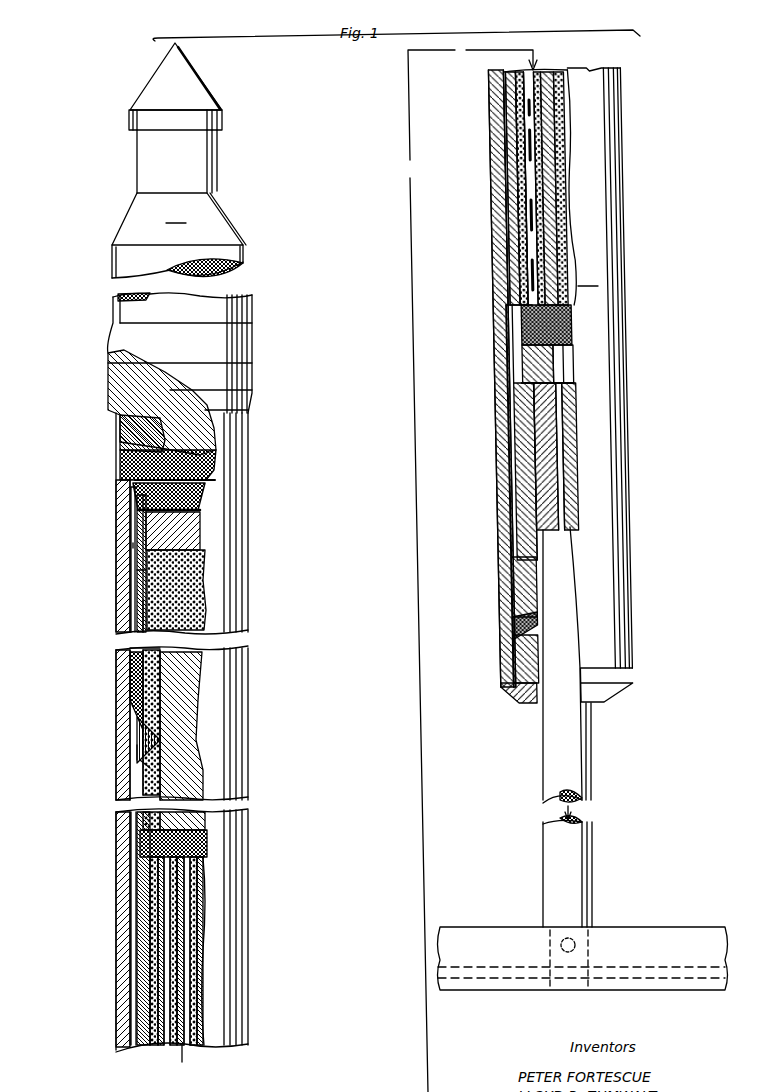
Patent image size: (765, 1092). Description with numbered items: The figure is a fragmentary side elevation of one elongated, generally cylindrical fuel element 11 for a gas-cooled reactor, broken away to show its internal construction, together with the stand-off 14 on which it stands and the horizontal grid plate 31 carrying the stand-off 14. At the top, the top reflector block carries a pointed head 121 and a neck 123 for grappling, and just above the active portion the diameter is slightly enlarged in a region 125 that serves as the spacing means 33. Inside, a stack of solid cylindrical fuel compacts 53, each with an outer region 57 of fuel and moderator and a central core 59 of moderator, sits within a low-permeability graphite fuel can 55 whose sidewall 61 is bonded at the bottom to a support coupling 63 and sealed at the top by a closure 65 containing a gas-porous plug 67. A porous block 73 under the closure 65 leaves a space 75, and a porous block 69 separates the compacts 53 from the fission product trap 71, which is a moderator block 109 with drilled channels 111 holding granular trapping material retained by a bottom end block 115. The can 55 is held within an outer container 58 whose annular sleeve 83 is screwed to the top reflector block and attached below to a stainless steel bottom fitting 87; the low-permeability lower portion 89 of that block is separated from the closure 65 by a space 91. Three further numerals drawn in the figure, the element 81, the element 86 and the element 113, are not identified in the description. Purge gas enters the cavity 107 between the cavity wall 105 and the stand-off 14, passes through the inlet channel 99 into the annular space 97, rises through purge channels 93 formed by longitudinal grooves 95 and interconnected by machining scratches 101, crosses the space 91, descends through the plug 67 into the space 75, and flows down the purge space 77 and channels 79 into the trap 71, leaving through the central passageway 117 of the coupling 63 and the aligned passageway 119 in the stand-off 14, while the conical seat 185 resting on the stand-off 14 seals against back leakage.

The fuel element 11 is at (372, 385).
The stand-off 14 is at (590, 740).
The grid plate 31 is at (623, 932).
The spacing means 33 is at (250, 335).
The fuel compact 53 is at (202, 570).
The fuel can 55 is at (137, 570).
The outer region 57 is at (143, 675).
The outer container 58 is at (130, 513).
The central core 59 is at (177, 698).
The sidewall 61 is at (143, 623).
The support coupling 63 is at (530, 363).
The top fuel can closure 65 is at (133, 490).
The plug 67 is at (203, 478).
The porous moderator block 69 is at (205, 840).
The fission product trap 71 is at (190, 898).
The porous moderator block 73 is at (200, 532).
The space 75 is at (197, 510).
The purge space 77 is at (122, 597).
The channels 79 is at (133, 545).
The liner 81 is at (137, 553).
The annular sleeve 83 is at (128, 532).
The sealing mass 86 is at (108, 368).
The bottom fitting 87 is at (515, 698).
The lower portion of the top reflector block 89 is at (122, 433).
The space 91 is at (130, 468).
The purge channels 93 is at (137, 645).
The longitudinal grooves 95 is at (138, 752).
The annular space 97 is at (513, 580).
The gas inlet channel 99 is at (513, 633).
The scratches 101 is at (145, 765).
The cavity wall 105 is at (533, 507).
The cavity 107 is at (533, 417).
The moderator block 109 is at (515, 188).
The channels 111 is at (532, 218).
The sleeve 113 is at (133, 850).
The bottom end block 115 is at (527, 327).
The central longitudinal passageway 117 is at (563, 368).
The longitudinal passageway 119 is at (563, 412).
The pointed head 121 is at (188, 93).
The neck 123 is at (203, 160).
The enlarged region 125 is at (252, 383).
The conical shaped seat 185 is at (553, 383).